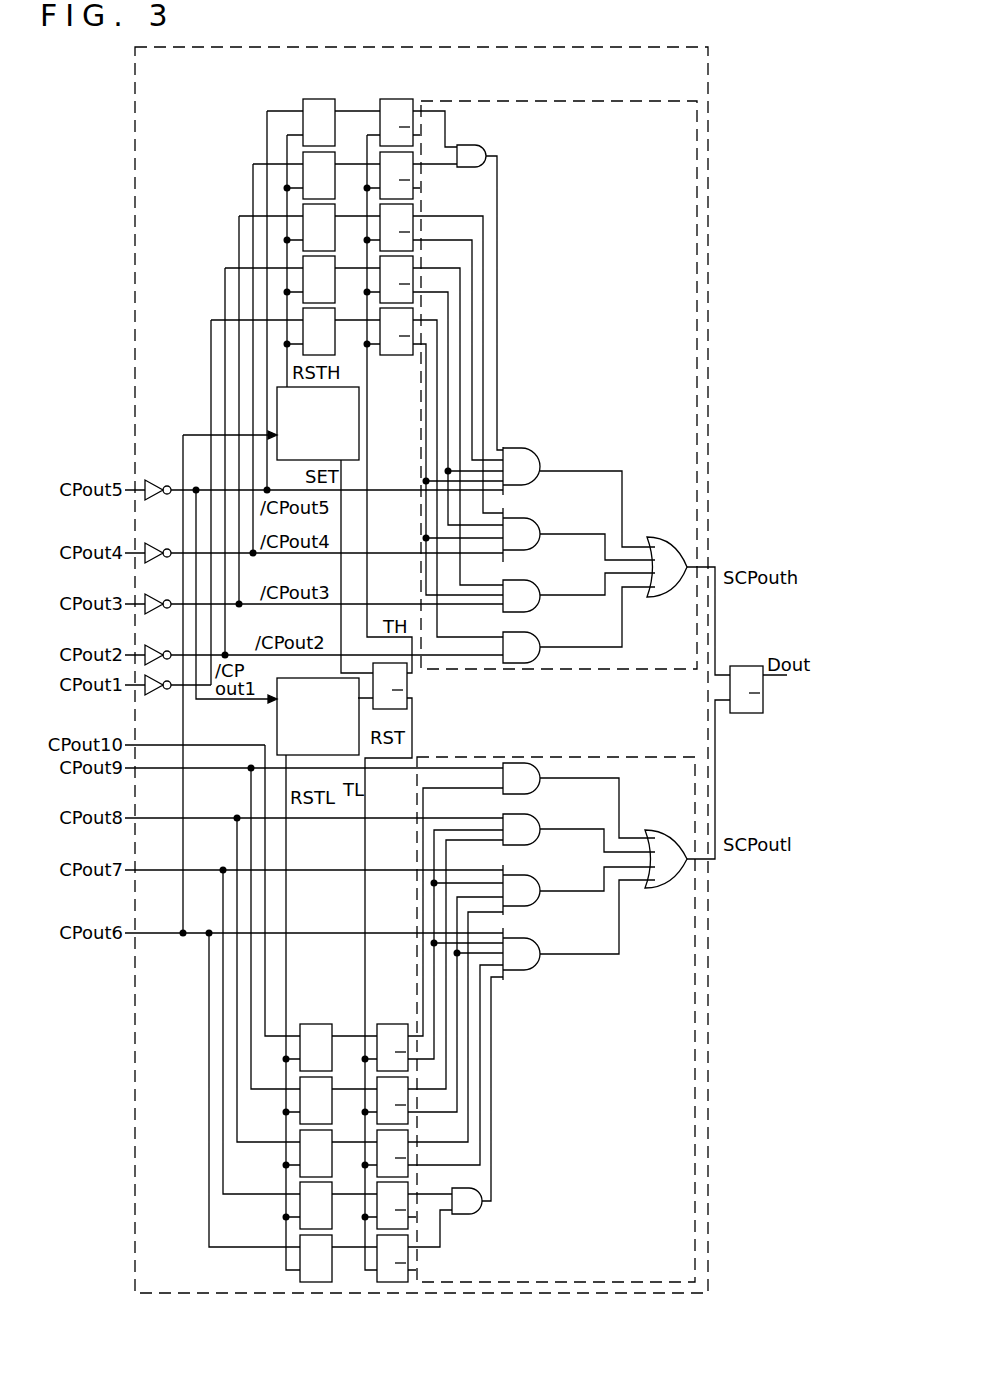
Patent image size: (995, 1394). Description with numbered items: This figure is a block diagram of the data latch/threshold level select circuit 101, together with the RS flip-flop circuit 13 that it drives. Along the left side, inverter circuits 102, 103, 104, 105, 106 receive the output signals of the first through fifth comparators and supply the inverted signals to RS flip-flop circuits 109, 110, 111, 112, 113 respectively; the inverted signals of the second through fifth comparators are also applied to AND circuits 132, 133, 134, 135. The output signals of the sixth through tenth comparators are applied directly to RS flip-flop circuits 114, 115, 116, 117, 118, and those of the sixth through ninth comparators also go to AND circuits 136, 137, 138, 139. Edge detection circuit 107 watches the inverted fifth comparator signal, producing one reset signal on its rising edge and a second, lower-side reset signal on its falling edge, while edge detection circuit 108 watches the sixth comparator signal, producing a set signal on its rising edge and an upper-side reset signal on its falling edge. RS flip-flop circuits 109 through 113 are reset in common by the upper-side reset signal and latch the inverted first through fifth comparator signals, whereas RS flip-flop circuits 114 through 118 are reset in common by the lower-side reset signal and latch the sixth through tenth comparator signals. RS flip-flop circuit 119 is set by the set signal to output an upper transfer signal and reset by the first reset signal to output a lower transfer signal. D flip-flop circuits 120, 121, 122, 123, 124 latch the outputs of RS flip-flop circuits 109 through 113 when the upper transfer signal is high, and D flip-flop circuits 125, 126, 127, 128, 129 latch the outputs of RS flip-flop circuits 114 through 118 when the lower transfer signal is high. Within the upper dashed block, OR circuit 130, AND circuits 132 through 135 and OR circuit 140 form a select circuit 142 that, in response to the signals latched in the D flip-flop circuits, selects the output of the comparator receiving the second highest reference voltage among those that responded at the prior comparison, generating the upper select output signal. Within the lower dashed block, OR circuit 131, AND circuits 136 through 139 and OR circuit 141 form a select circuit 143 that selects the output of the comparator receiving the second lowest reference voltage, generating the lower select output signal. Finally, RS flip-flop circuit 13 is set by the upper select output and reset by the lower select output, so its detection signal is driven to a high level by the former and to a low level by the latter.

The RS flip-flop circuit 13 is at (745, 713).
The data latch/threshold level select circuit 101 is at (708, 85).
The inverter circuit 102 is at (158, 700).
The inverter circuit 103 is at (157, 645).
The inverter circuit 104 is at (157, 594).
The inverter circuit 105 is at (157, 543).
The inverter circuit 106 is at (157, 480).
The edge detection circuit 107 is at (277, 728).
The edge detection circuit 108 is at (359, 428).
The RS flip-flop circuit 109 is at (303, 330).
The RS flip-flop circuit 110 is at (303, 275).
The RS flip-flop circuit 111 is at (303, 222).
The RS flip-flop circuit 112 is at (303, 170).
The RS flip-flop circuit 113 is at (311, 98).
The RS flip-flop circuit 114 is at (300, 1277).
The RS flip-flop circuit 115 is at (300, 1210).
The RS flip-flop circuit 116 is at (300, 1157).
The RS flip-flop circuit 117 is at (300, 1099).
The RS flip-flop circuit 118 is at (318, 1023).
The RS flip-flop circuit 119 is at (409, 678).
The D flip-flop circuit 120 is at (403, 356).
The D flip-flop circuit 121 is at (414, 265).
The D flip-flop circuit 122 is at (414, 212).
The D flip-flop circuit 123 is at (416, 188).
The D flip-flop circuit 124 is at (399, 98).
The D flip-flop circuit 125 is at (410, 1270).
The D flip-flop circuit 126 is at (408, 1188).
The D flip-flop circuit 127 is at (408, 1137).
The D flip-flop circuit 128 is at (408, 1118).
The D flip-flop circuit 129 is at (394, 1023).
The OR circuit 130 is at (479, 144).
The OR circuit 131 is at (470, 1208).
The AND circuit 132 is at (530, 638).
The AND circuit 133 is at (530, 583).
The AND circuit 134 is at (540, 520).
The AND circuit 135 is at (525, 447).
The AND circuit 136 is at (527, 946).
The AND circuit 137 is at (527, 886).
The AND circuit 138 is at (533, 822).
The AND circuit 139 is at (518, 762).
The OR circuit 140 is at (665, 536).
The OR circuit 141 is at (665, 850).
The select circuit 142 is at (603, 100).
The select circuit 143 is at (605, 757).